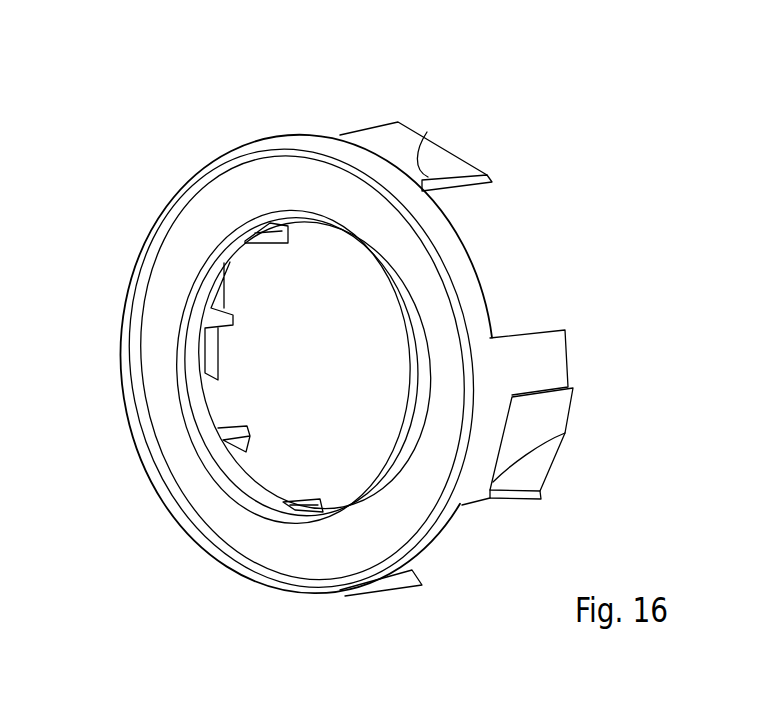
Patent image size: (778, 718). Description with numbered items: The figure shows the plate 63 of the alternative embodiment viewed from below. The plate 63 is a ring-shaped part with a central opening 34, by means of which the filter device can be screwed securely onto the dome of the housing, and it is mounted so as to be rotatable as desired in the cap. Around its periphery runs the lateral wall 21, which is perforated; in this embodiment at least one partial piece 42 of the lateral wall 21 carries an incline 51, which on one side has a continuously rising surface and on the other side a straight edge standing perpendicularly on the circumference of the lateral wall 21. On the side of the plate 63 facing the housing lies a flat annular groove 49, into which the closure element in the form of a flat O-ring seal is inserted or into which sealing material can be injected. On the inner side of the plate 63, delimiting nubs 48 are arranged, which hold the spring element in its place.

The lateral wall 21 is at (320, 128).
The central opening 34 is at (328, 372).
The partial piece 42 is at (488, 187).
The delimiting nub 48 is at (230, 422).
The annular groove 49 is at (207, 210).
The incline 51 is at (408, 134).
The plate 63 is at (567, 148).